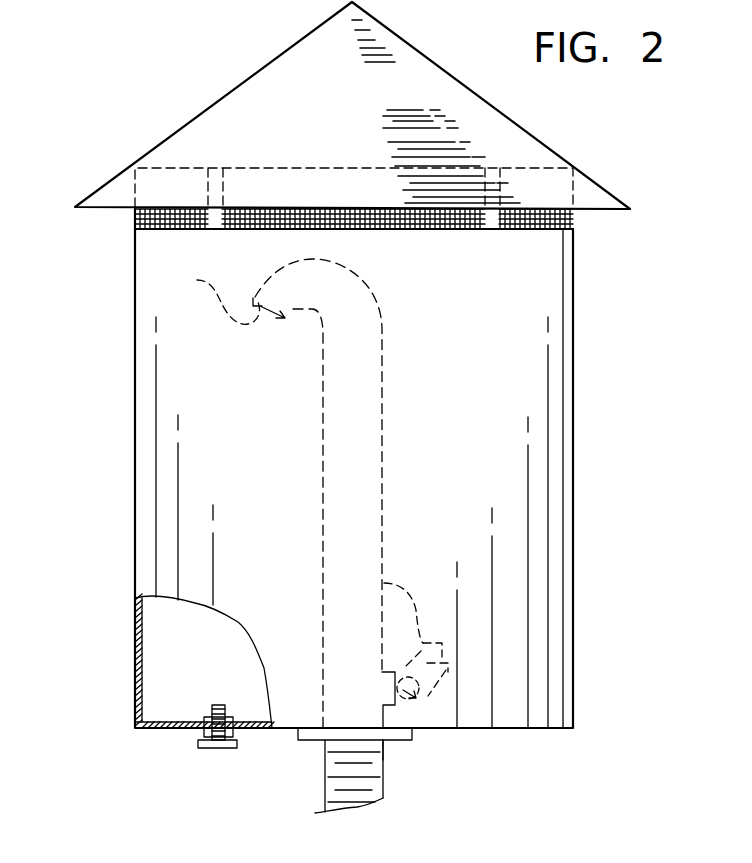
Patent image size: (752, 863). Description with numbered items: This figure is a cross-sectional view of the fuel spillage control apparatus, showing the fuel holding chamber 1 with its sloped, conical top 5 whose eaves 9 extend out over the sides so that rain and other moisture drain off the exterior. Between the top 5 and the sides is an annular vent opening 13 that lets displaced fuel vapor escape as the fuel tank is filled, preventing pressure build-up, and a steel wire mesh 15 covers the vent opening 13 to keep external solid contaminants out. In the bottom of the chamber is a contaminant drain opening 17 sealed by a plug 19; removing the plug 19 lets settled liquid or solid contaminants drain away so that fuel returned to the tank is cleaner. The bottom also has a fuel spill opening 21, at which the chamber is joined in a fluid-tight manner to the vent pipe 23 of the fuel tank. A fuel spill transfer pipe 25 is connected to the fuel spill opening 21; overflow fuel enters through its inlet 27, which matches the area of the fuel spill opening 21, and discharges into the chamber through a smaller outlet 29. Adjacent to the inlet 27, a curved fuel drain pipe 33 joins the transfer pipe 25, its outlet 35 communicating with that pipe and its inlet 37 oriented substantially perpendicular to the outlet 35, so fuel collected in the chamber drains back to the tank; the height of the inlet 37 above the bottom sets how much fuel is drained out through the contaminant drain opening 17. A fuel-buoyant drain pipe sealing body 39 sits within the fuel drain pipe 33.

The fuel holding chamber 1 is at (145, 320).
The top 5 is at (247, 108).
The eaves 9 is at (113, 193).
The vent opening 13 is at (133, 215).
The mesh 15 is at (152, 229).
The contaminant drain opening 17 is at (200, 728).
The plug 19 is at (214, 748).
The fuel spill opening 21 is at (318, 740).
The vent pipe 23 is at (325, 798).
The fuel spill transfer pipe 25 is at (392, 378).
The inlet 27 is at (381, 738).
The outlet 29 is at (197, 281).
The fuel drain pipe 33 is at (448, 663).
The outlet 35 is at (396, 690).
The inlet 37 is at (382, 589).
The drain pipe sealing body 39 is at (414, 700).